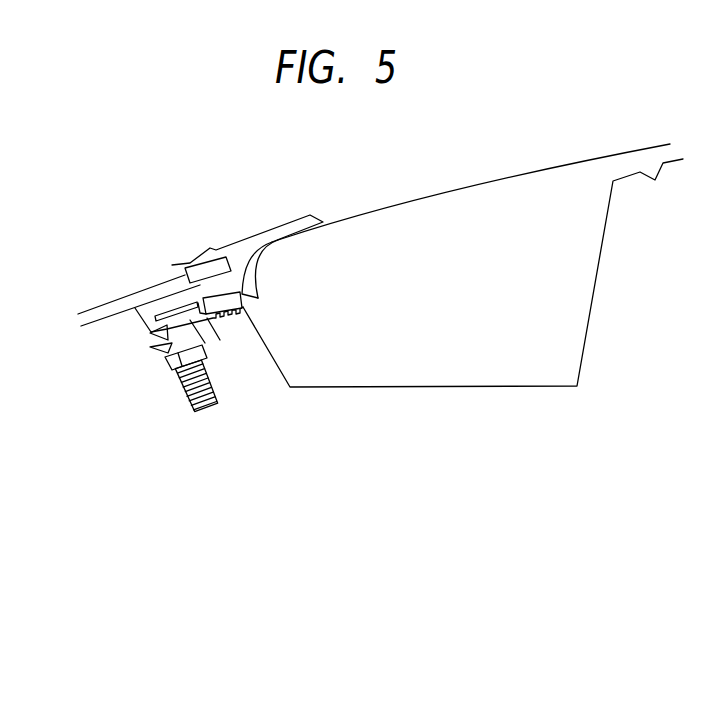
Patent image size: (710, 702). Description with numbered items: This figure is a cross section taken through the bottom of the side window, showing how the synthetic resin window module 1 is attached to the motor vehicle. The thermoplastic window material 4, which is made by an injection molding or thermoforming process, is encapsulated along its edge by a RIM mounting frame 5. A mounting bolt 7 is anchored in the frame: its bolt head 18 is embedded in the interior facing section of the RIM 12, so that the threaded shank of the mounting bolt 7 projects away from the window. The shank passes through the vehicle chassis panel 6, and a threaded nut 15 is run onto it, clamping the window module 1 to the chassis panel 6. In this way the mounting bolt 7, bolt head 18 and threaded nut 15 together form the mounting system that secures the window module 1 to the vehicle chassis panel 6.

The window module 1 is at (101, 306).
The thermoplastic window material 4 is at (137, 298).
The RIM mounting frame 5 is at (283, 224).
The vehicle chassis panel 6 is at (417, 197).
The mounting bolt 7 is at (213, 405).
The RIM 12 is at (134, 312).
The threaded nut 15 is at (167, 357).
The bolt head 18 is at (179, 305).